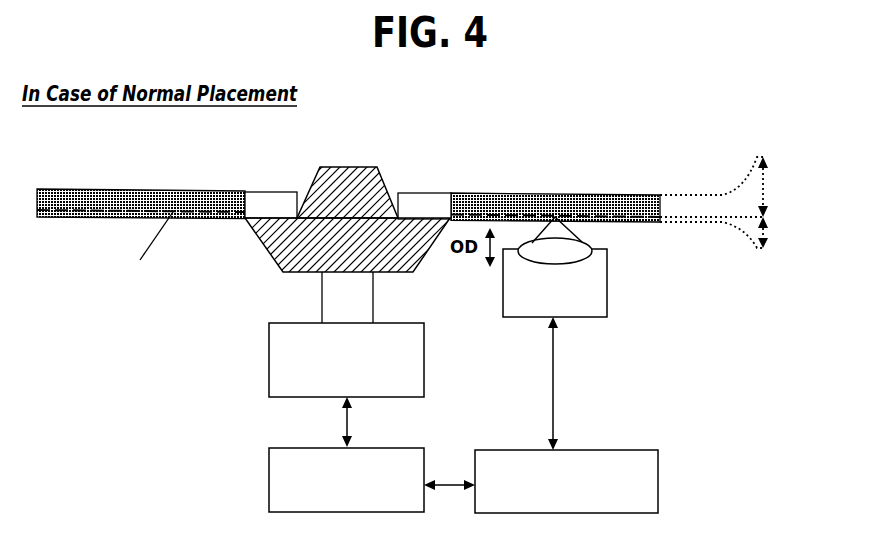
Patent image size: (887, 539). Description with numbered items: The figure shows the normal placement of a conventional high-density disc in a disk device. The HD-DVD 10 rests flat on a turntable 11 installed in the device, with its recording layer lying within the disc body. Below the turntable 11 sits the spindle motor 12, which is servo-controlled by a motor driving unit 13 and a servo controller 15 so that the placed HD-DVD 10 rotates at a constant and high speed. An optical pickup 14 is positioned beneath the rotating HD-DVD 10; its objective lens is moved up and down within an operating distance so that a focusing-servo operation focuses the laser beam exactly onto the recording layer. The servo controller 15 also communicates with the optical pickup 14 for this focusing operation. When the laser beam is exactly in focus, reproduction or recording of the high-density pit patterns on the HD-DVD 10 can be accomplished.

The HD-DVD 10 is at (528, 193).
The turntable 11 is at (347, 176).
The spindle motor 12 is at (268, 362).
The motor driving unit 13 is at (282, 477).
The optical pickup 14 is at (598, 300).
The servo controller 15 is at (630, 467).